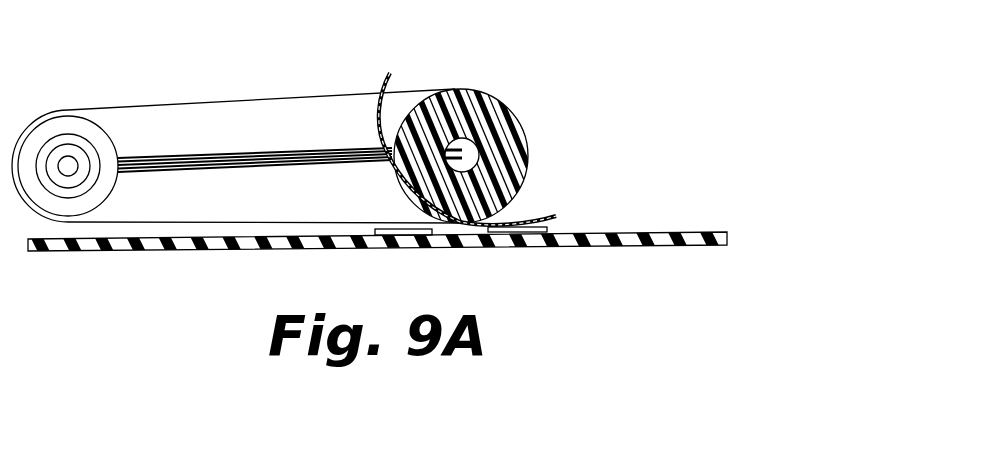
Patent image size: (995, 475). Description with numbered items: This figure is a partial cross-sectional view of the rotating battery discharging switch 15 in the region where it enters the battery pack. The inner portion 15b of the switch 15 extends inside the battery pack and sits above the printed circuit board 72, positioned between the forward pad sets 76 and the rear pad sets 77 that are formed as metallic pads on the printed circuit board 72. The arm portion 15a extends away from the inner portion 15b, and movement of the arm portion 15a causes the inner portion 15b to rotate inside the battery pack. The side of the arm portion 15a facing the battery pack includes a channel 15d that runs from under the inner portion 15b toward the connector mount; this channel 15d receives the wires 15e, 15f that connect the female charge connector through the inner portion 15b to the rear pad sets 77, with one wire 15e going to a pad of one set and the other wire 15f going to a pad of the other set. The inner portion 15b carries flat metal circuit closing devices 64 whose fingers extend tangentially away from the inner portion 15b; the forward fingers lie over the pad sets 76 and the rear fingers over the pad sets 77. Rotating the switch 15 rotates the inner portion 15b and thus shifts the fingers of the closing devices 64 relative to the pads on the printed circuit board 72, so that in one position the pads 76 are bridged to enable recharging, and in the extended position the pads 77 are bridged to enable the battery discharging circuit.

The rotating battery discharging switch 15 is at (158, 74).
The arm portion 15a is at (306, 131).
The inner portion 15b is at (536, 65).
The channel 15d is at (228, 172).
The wire 15e is at (455, 138).
The wire 15f is at (478, 168).
The circuit closing device 64 is at (556, 216).
The printed circuit board 72 is at (87, 254).
The metallic pads 76 is at (509, 236).
The metallic pads 77 is at (380, 237).